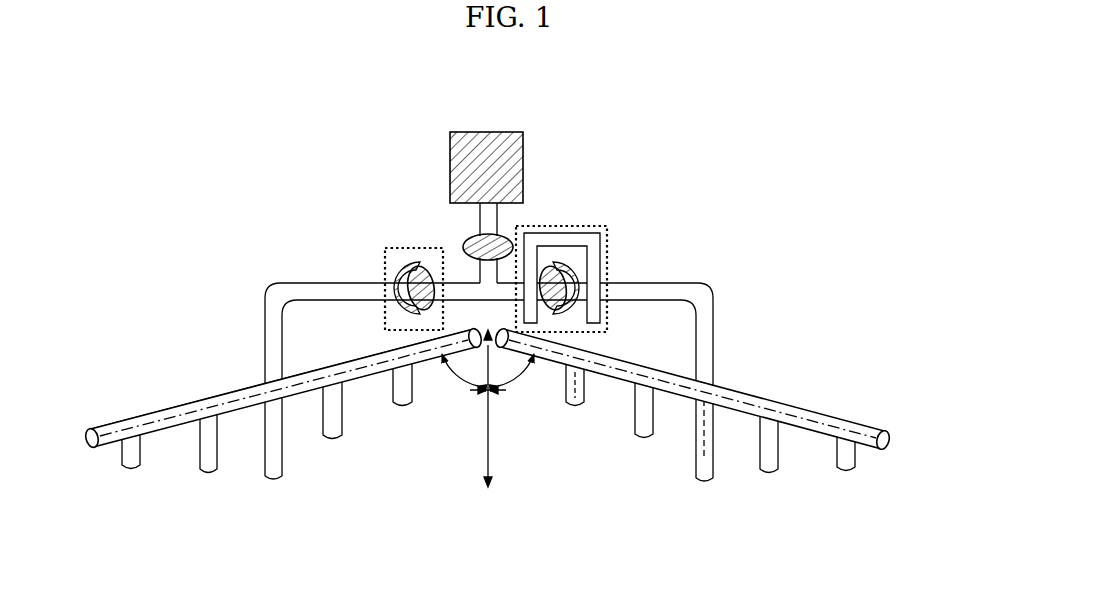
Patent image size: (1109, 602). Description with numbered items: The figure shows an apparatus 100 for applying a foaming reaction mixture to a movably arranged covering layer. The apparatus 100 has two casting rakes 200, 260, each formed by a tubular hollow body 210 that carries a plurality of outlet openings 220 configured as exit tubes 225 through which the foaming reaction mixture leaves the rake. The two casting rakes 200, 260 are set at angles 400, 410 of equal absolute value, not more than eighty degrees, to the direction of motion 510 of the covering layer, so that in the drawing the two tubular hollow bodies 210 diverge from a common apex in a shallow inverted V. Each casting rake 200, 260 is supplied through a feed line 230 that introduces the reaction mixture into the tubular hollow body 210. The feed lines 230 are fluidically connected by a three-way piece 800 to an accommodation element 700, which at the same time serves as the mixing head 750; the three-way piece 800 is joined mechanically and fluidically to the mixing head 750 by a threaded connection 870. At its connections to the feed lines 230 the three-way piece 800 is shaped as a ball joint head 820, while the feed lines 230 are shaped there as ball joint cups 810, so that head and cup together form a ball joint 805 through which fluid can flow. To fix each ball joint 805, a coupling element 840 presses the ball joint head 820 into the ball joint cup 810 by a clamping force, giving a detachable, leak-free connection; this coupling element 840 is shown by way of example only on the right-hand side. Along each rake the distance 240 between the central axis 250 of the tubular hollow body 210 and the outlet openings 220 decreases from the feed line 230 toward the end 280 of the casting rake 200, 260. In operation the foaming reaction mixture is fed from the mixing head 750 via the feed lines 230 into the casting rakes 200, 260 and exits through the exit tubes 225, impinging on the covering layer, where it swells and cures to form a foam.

The apparatus 100 is at (619, 169).
The casting rake 200 is at (784, 387).
The tubular hollow body 210 is at (182, 405).
The outlet opening 220 is at (210, 475).
The exit tube 225 is at (191, 464).
The feed line 230 is at (267, 290).
The distance 240 is at (585, 388).
The central axis 250 is at (317, 380).
The casting rake 260 is at (222, 384).
The end of the casting rake 280 is at (78, 448).
The angle 400 is at (503, 382).
The angle 410 is at (468, 378).
The direction of motion 510 is at (488, 462).
The accommodation element 700 is at (447, 150).
The mixing head 750 is at (487, 132).
The 3-way piece 800 is at (462, 246).
The ball joint 805 is at (385, 272).
The ball joint cup 810 is at (580, 262).
The ball joint head 820 is at (400, 252).
The coupling element 840 is at (533, 236).
The threaded connection 870 is at (477, 236).